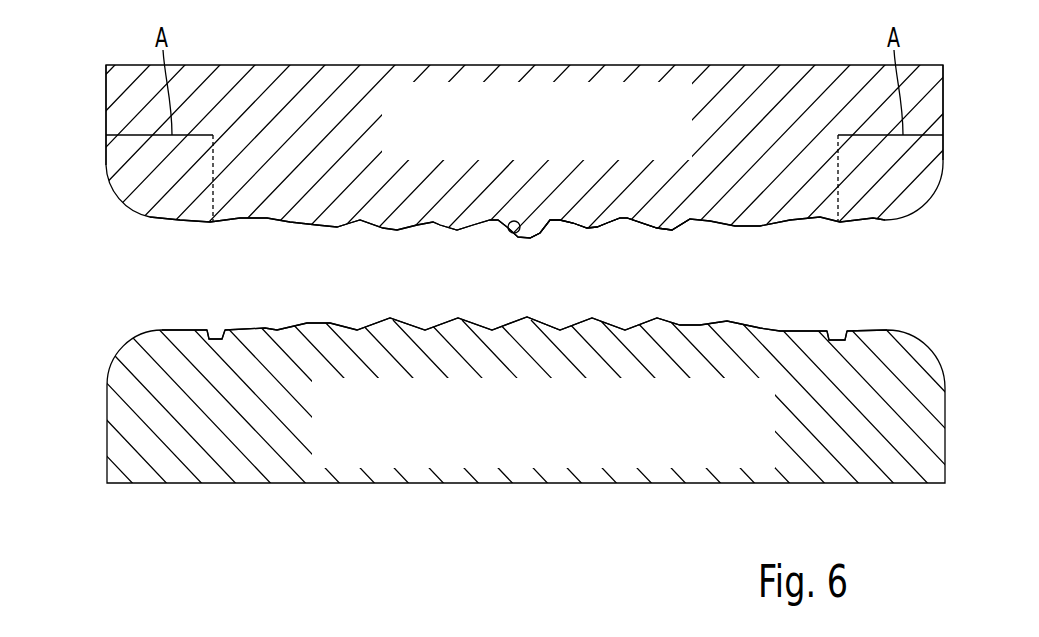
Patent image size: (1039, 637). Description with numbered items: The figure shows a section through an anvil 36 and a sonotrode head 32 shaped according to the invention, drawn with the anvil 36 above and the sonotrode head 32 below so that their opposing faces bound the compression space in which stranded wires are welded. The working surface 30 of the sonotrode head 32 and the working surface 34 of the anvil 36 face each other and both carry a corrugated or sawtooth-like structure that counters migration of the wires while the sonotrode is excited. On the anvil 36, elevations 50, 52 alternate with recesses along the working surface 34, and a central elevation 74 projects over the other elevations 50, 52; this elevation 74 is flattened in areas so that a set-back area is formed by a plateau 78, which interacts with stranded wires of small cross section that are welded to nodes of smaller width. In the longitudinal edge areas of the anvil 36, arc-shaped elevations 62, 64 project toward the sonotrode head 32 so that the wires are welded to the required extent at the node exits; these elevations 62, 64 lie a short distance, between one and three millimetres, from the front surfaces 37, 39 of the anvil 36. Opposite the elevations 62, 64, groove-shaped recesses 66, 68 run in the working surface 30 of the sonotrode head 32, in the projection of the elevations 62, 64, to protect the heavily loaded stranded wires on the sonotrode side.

The working surface 30 is at (306, 323).
The sonotrode head 32 is at (220, 412).
The working surface 34 is at (680, 227).
The anvil 36 is at (757, 105).
The front surface 37 is at (107, 97).
The front surface 39 is at (944, 88).
The elevation 50 is at (590, 228).
The elevation 52 is at (657, 228).
The elevation 62 is at (213, 222).
The elevation 64 is at (838, 222).
The recess 66 is at (213, 330).
The recess 68 is at (840, 331).
The elevation 74 is at (552, 222).
The plateau 78 is at (507, 232).